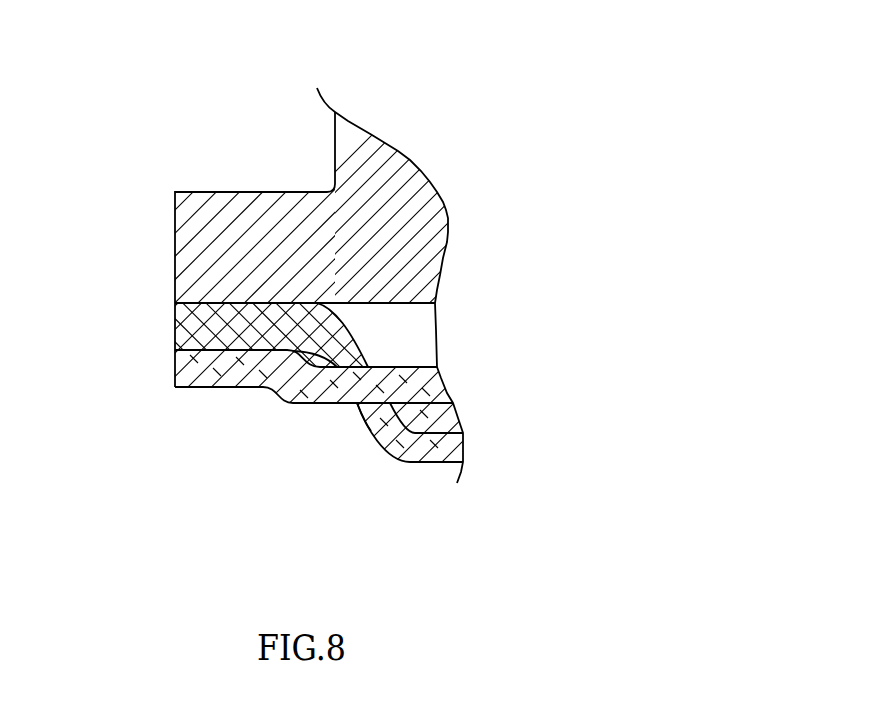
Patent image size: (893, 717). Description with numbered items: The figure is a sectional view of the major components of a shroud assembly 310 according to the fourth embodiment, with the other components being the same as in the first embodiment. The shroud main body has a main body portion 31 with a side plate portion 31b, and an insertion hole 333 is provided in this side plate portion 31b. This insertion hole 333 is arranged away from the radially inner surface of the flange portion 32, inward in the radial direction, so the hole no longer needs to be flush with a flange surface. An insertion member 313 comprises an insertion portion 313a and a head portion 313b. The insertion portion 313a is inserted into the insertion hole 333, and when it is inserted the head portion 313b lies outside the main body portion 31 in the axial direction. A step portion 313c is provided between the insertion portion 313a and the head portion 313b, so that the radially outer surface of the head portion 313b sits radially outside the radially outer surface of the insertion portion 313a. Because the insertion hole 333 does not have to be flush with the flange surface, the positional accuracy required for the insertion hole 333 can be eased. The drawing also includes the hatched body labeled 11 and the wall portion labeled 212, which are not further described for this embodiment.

The shroud assembly 310 is at (223, 127).
The lens holder 11 is at (175, 207).
The flange portion 32 is at (175, 318).
The insertion member 313 is at (175, 362).
The insertion portion 313a is at (407, 367).
The head portion 313b is at (207, 390).
The step portion 313c is at (275, 392).
The insertion hole 333 is at (350, 408).
The side plate portion 31b is at (370, 415).
The main body portion 31 is at (397, 460).
The side wall 212 is at (447, 472).